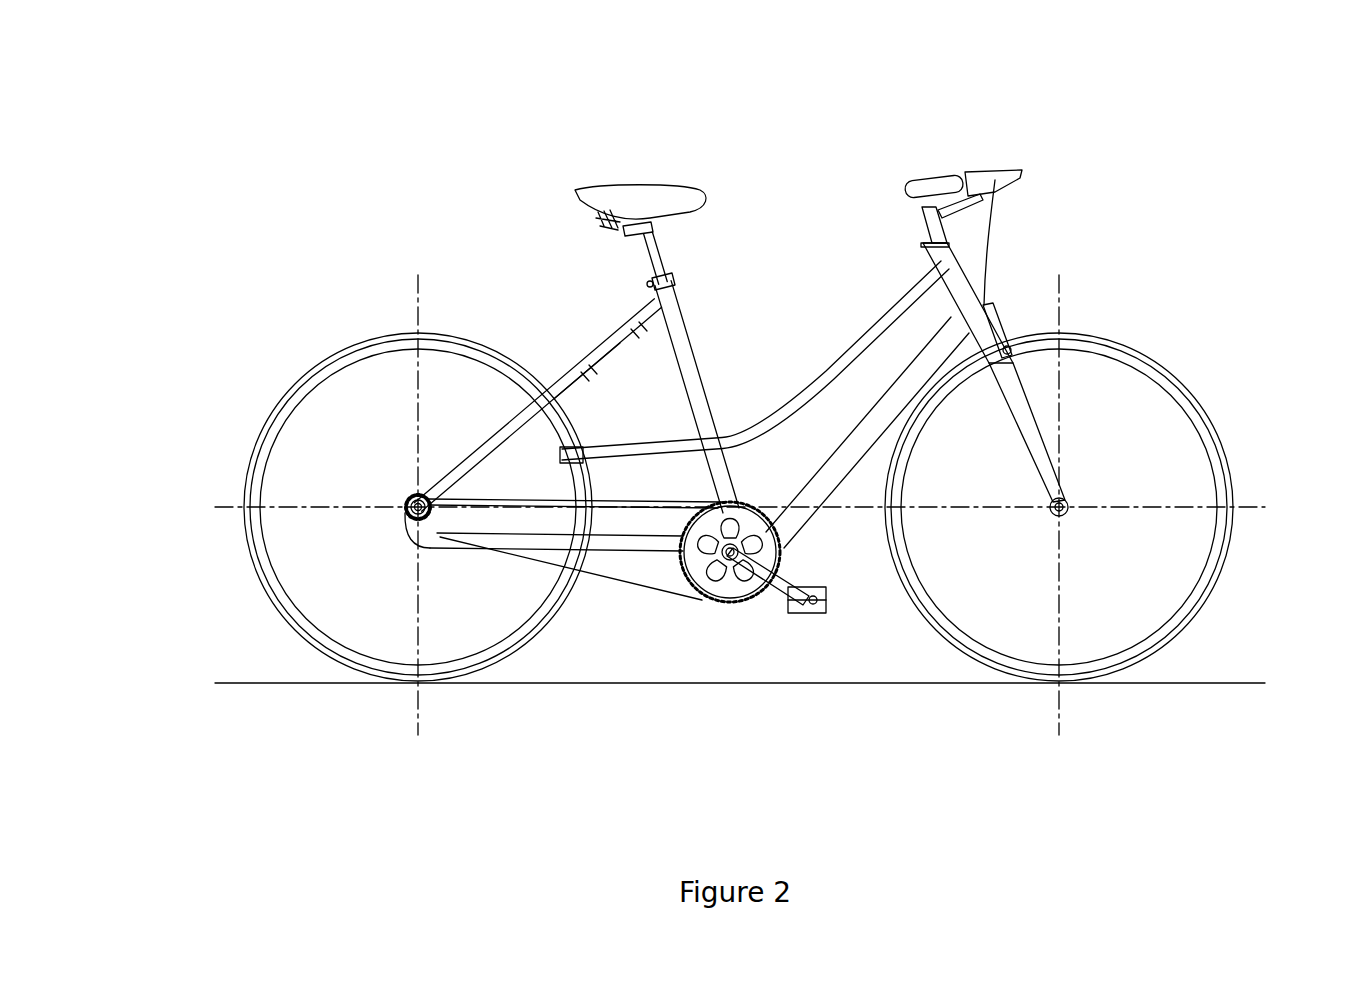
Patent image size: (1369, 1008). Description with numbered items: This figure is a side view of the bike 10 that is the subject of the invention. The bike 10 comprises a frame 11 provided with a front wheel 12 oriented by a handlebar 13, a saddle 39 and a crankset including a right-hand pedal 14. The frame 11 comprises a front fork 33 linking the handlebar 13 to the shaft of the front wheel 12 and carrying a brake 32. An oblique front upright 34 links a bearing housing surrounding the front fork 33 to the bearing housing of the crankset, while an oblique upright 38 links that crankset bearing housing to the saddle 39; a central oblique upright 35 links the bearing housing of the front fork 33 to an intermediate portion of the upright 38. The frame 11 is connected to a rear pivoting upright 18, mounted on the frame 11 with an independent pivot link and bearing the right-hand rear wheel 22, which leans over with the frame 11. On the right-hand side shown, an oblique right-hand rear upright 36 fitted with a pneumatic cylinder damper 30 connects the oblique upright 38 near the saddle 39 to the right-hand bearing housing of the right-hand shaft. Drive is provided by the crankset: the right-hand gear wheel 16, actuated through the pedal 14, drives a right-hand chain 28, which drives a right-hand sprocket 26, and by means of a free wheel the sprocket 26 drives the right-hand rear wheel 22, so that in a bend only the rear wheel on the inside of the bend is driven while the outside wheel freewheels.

The bike 10 is at (688, 85).
The frame 11 is at (840, 148).
The front wheel 12 is at (1220, 580).
The handlebar 13 is at (1020, 172).
The right-hand pedal 14 is at (812, 602).
The right-hand gear wheel 16 is at (720, 565).
The rear pivoting upright 18 is at (540, 535).
The right-hand rear wheel 22 is at (258, 572).
The right-hand sprocket 26 is at (412, 495).
The right-hand chain 28 is at (640, 590).
The pneumatic cylinder damper 30 is at (608, 343).
The brake 32 is at (1002, 332).
The front fork 33 is at (1017, 420).
The oblique front upright 34 is at (820, 480).
The central oblique upright 35 is at (847, 350).
The oblique right-hand rear upright 36 is at (555, 375).
The oblique upright 38 is at (688, 366).
The saddle 39 is at (640, 190).